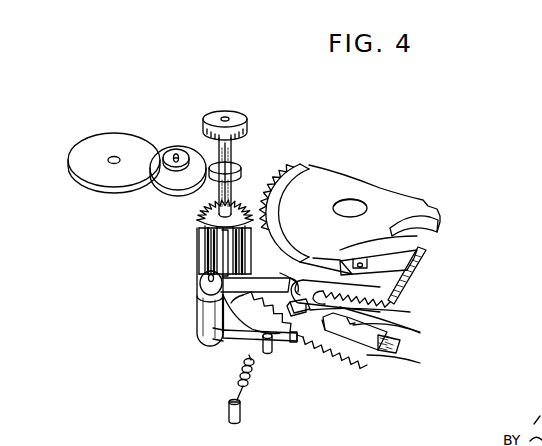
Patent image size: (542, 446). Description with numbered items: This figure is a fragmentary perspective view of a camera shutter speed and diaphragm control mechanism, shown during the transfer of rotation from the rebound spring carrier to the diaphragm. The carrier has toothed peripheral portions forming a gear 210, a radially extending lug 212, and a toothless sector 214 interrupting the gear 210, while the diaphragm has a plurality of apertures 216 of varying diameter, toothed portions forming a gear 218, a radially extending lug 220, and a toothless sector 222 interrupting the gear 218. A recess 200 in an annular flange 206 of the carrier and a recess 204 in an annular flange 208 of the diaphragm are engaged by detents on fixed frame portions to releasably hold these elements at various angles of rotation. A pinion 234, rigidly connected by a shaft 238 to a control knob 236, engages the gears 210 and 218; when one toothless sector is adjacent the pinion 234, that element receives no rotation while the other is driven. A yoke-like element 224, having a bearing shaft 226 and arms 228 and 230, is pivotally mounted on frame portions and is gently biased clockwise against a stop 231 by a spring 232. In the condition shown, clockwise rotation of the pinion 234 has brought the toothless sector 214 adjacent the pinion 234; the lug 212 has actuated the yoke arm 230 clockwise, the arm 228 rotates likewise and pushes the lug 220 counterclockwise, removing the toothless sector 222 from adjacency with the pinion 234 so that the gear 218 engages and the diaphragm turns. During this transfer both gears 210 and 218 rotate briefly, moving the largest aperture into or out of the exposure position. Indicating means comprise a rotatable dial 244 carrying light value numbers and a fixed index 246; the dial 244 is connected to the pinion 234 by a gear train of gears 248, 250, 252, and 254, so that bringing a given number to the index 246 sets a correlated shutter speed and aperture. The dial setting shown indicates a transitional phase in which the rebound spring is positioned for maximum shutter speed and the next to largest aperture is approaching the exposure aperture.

The recess 200 is at (403, 326).
The recess 204 is at (417, 238).
The annular flange 206 is at (382, 344).
The annular flange 208 is at (413, 265).
The gear 210 is at (366, 363).
The lug 212 is at (383, 313).
The toothless sector 214 is at (202, 265).
The apertures 216 is at (342, 205).
The gear 218 is at (390, 304).
The lug 220 is at (394, 291).
The toothless sector 222 is at (298, 201).
The yoke-like element 224 is at (221, 351).
The bearing shaft 226 is at (206, 284).
The arm 228 is at (223, 297).
The arm 230 is at (212, 333).
The stop 231 is at (269, 348).
The spring 232 is at (251, 382).
The pinion 234 is at (195, 240).
The control knob 236 is at (242, 89).
The shaft 238 is at (226, 152).
The rotatable dial 244 is at (116, 192).
The fixed index 246 is at (135, 117).
The gear 248 is at (91, 190).
The gear 250 is at (172, 180).
The gear 252 is at (175, 191).
The gear 254 is at (247, 174).